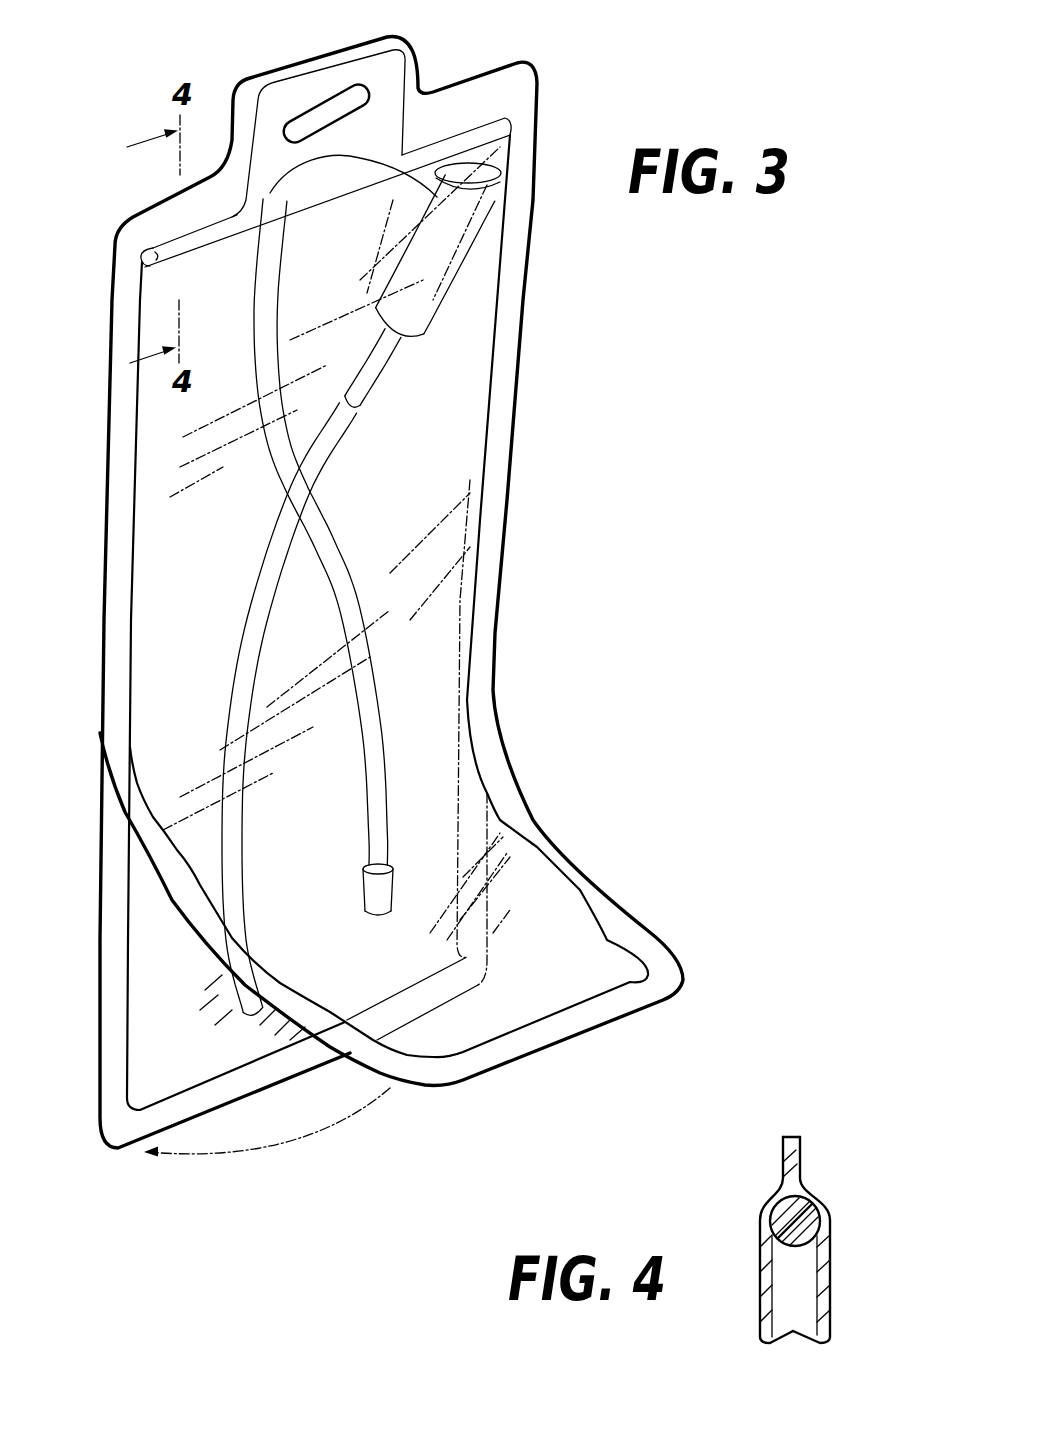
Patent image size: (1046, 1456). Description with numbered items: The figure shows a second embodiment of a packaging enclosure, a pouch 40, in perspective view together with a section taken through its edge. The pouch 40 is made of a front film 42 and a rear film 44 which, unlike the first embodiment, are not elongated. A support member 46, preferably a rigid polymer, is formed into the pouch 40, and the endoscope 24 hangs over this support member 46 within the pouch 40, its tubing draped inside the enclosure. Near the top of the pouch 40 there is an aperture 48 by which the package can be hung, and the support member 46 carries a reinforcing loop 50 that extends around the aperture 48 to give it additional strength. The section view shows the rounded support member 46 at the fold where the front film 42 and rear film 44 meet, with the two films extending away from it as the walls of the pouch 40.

In FIG. 3, the endoscope 24 is at (432, 358).
In FIG. 3, the pouch 40 is at (532, 490).
In FIG. 3, the front film 42 is at (563, 943).
In FIG. 4, the front film 42 is at (833, 1253).
In FIG. 3, the rear film 44 is at (153, 1072).
In FIG. 4, the rear film 44 is at (758, 1254).
In FIG. 3, the support member 46 is at (195, 250).
In FIG. 4, the support member 46 is at (808, 1216).
In FIG. 3, the aperture 48 is at (378, 96).
In FIG. 3, the reinforcing loop 50 is at (353, 70).